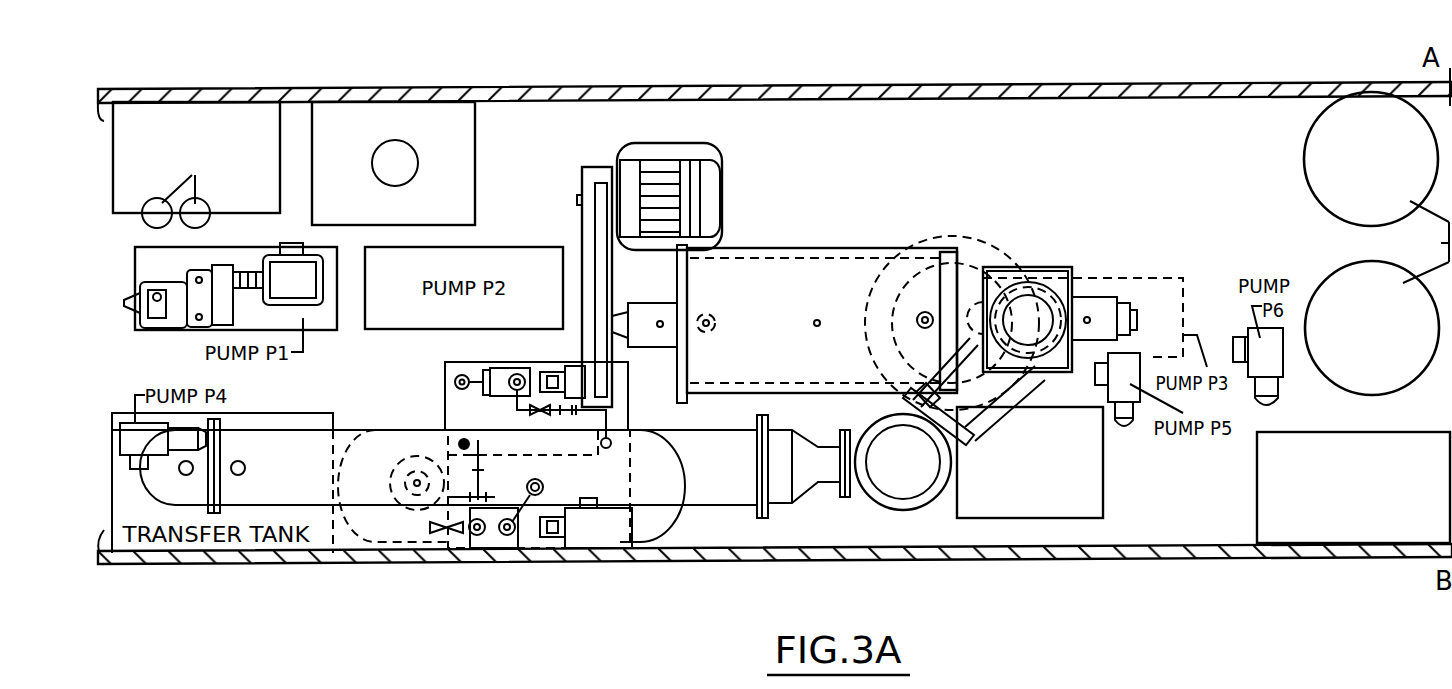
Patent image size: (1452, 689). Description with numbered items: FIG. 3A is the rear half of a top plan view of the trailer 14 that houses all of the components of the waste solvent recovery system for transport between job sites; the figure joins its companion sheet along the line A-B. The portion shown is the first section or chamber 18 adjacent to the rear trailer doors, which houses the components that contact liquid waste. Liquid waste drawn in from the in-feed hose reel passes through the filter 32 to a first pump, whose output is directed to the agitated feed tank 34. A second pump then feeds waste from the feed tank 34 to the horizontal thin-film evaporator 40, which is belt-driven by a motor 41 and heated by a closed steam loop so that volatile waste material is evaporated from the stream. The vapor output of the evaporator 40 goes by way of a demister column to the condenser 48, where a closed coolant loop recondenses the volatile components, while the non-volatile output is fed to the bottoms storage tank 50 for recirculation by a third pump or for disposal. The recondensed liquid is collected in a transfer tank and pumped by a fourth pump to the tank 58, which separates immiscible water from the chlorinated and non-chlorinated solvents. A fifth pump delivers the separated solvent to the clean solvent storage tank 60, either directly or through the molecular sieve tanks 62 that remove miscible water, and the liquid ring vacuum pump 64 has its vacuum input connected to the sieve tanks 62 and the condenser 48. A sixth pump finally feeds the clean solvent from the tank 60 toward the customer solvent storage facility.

The trailer 14 is at (1086, 92).
The first section or chamber 18 is at (948, 104).
The filter 32 is at (260, 203).
The feed tank 34 is at (452, 104).
The horizontal thin-film evaporator 40 is at (800, 255).
The motor 41 is at (717, 174).
The condenser 48 is at (724, 501).
The bottoms storage tank 50 is at (996, 249).
The tank for separation of immiscible components 58 is at (1103, 482).
The clean solvent storage tank 60 is at (1260, 478).
The molecular sieve tanks 62 is at (1304, 156).
The liquid ring vacuum pump 64 is at (448, 561).